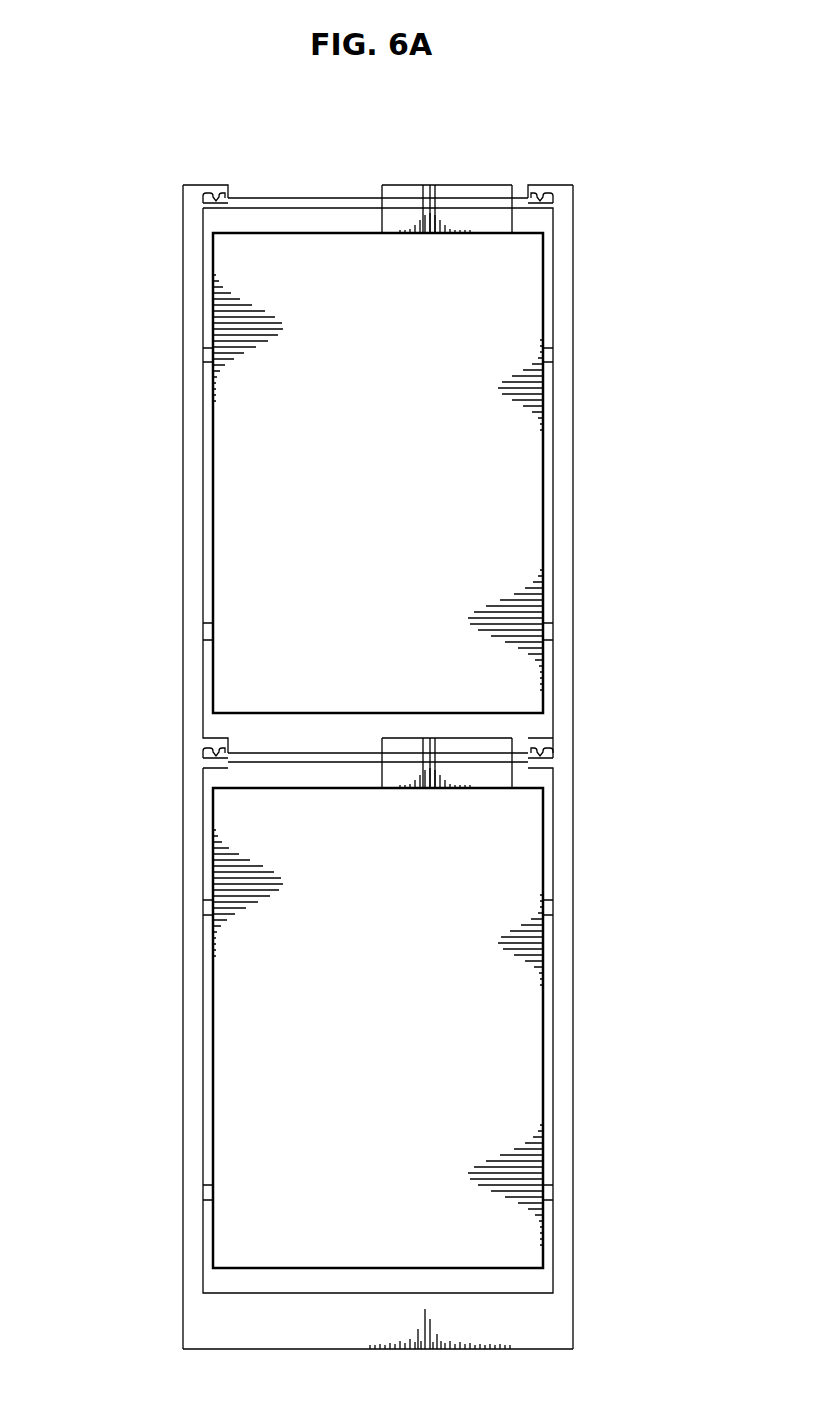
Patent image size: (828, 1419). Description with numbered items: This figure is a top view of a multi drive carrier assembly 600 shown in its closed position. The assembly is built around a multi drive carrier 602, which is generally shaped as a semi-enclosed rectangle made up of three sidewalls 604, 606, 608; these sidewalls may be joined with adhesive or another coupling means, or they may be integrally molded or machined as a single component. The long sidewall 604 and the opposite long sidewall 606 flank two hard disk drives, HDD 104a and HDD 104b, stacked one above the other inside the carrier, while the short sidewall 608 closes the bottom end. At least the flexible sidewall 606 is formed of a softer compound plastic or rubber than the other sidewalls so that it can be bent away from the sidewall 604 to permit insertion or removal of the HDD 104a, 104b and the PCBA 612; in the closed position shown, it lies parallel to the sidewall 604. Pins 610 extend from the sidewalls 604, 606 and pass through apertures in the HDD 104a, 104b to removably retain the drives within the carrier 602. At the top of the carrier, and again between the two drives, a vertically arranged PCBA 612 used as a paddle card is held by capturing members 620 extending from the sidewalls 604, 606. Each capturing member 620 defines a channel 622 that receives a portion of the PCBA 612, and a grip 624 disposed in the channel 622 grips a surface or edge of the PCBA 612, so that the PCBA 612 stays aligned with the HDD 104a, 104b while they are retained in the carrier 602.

The multi drive carrier assembly 600 is at (305, 116).
The multi drive carrier 602 is at (329, 742).
The sidewall 604 is at (183, 400).
The flexible sidewall 606 is at (575, 372).
The sidewall 608 is at (395, 1350).
The pin 610 is at (203, 655).
The PCBA 612 is at (354, 188).
The capturing member 620 is at (200, 180).
The channel 622 is at (241, 196).
The grip 624 is at (522, 186).
The HDD 104a is at (408, 1080).
The HDD 104b is at (408, 525).